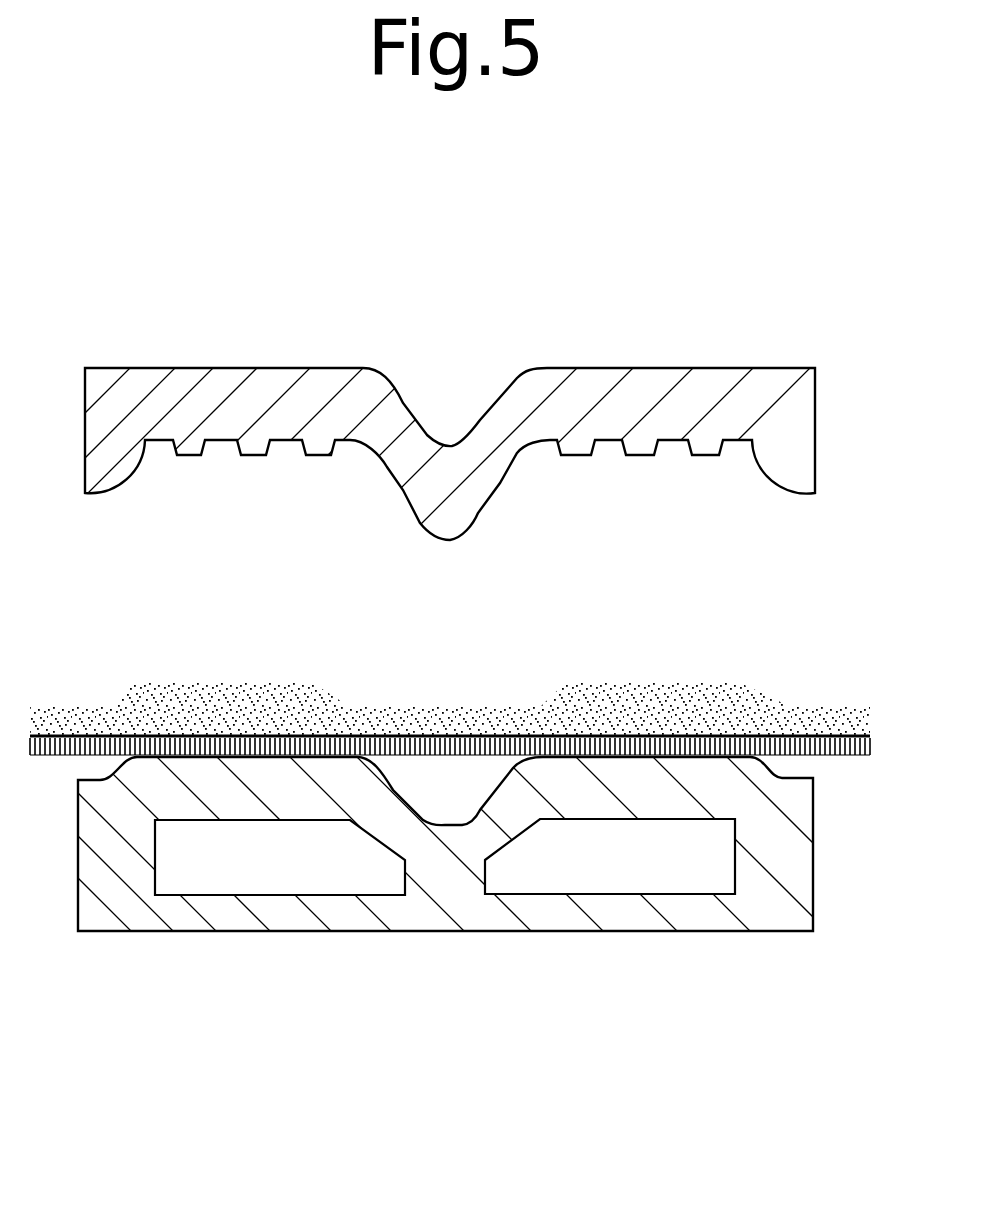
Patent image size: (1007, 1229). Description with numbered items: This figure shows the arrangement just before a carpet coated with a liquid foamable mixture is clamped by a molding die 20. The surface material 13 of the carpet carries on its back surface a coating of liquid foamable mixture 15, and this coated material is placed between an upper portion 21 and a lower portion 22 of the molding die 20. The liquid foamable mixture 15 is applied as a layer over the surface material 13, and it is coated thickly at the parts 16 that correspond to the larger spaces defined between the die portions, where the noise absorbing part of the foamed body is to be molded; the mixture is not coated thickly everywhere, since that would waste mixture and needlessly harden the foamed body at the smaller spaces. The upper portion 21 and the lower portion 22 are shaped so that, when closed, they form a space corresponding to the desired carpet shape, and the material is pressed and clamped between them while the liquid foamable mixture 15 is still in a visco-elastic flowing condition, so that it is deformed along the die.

The molding die 20 is at (417, 398).
The upper portion 21 is at (596, 378).
The liquid foamable mixture 15 is at (420, 723).
The thickly coated part 16 is at (670, 698).
The surface material 13 is at (833, 742).
The lower portion 22 is at (633, 913).